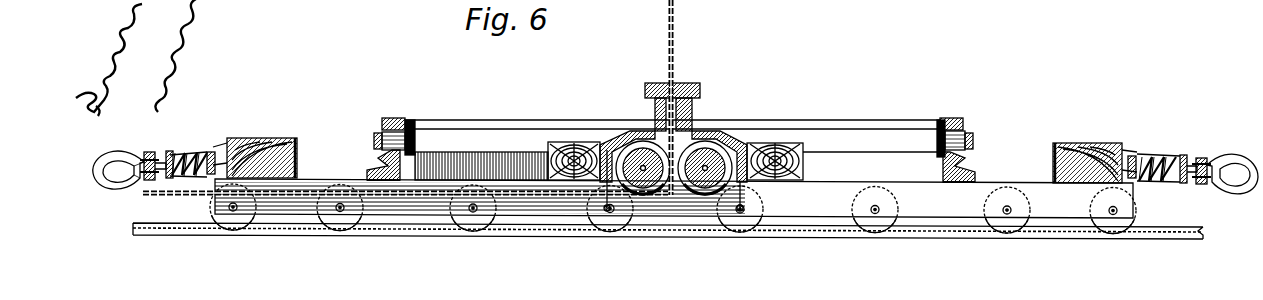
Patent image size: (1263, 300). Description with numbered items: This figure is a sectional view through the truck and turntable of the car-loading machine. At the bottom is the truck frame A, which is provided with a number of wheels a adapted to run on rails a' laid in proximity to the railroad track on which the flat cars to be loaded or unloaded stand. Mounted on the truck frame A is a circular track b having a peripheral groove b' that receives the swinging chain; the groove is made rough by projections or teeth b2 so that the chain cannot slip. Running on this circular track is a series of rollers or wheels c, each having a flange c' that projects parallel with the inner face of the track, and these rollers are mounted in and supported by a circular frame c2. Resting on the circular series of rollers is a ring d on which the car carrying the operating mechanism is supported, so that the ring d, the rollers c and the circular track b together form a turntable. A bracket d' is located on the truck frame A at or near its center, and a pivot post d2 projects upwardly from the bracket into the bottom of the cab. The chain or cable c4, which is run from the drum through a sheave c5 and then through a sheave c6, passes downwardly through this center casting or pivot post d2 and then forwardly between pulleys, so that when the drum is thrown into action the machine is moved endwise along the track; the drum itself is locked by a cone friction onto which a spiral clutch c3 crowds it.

The truck frame A is at (672, 121).
The wheels a is at (673, 216).
The rails a' is at (668, 239).
The circular track b is at (677, 159).
The peripheral groove b' is at (674, 166).
The projections or teeth b2 is at (370, 174).
The rollers or wheels c is at (675, 127).
The flange c' is at (675, 127).
The circular frame c2 is at (374, 140).
The spiral clutch c3 is at (643, 168).
The chain or cable c4 is at (676, 40).
The sheave c5 is at (705, 168).
The sheave c6 is at (205, 201).
The ring d is at (672, 114).
The bracket d' is at (673, 163).
The pivot post d2 is at (698, 105).